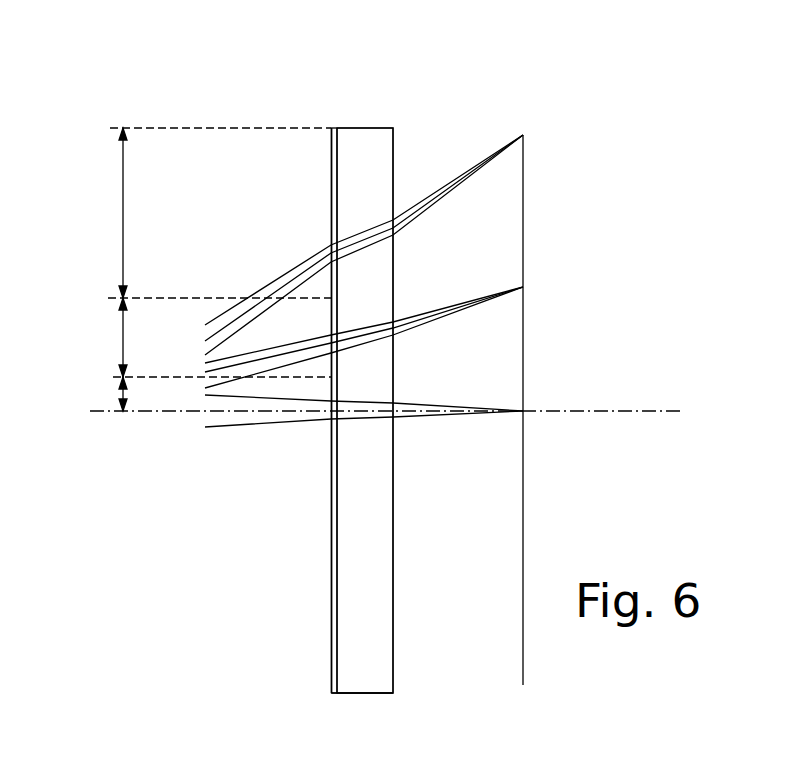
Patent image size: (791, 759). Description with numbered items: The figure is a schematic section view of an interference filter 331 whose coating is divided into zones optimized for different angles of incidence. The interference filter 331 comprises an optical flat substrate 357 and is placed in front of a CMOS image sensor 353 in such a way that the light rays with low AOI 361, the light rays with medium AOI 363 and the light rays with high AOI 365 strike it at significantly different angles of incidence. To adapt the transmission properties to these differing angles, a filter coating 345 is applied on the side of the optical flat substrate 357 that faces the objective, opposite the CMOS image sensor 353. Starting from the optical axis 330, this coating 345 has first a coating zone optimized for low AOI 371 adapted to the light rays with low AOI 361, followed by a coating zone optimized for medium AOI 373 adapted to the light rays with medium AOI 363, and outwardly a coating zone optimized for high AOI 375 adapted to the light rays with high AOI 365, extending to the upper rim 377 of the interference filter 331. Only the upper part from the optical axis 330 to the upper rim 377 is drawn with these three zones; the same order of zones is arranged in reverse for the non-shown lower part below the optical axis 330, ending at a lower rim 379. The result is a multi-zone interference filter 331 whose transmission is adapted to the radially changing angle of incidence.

The interference filter 331 is at (362, 98).
The upper rim 377 is at (346, 128).
The optical flat substrate 357 is at (372, 142).
The lower rim 379 is at (366, 693).
The filter coating 345 is at (321, 558).
The CMOS image sensor 353 is at (590, 200).
The optical axis 330 is at (598, 410).
The light rays with high AOI 365 is at (217, 325).
The light rays with medium AOI 363 is at (228, 370).
The light rays with low AOI 361 is at (233, 426).
The coating zone optimized for high AOI 375 is at (98, 213).
The coating zone optimized for medium AOI 373 is at (98, 337).
The coating zone optimized for low AOI 371 is at (98, 394).